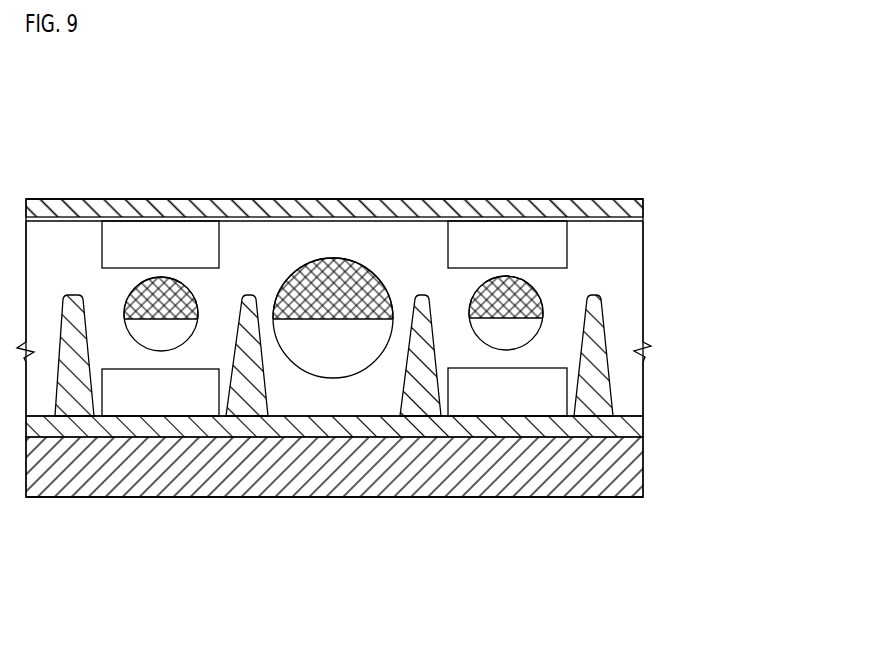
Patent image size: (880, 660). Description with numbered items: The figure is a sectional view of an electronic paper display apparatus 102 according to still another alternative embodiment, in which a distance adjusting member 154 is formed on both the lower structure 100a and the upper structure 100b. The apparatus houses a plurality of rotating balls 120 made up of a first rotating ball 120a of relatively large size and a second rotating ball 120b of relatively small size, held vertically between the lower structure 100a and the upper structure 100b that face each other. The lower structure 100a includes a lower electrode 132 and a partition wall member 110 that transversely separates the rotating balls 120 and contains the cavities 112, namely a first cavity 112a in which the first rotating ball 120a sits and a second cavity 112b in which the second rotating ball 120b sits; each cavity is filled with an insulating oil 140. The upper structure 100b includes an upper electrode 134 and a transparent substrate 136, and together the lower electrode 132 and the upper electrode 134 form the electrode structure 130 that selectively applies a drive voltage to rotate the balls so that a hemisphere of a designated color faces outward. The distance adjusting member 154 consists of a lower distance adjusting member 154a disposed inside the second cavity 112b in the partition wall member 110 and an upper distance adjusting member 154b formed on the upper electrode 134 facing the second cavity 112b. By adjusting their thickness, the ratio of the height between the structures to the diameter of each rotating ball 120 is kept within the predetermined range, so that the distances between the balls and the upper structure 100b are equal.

The electronic paper display apparatus 102 is at (65, 75).
The lower structure 100a is at (98, 497).
The upper structure 100b is at (80, 200).
The partition wall member 110 is at (508, 412).
The cavities 112 is at (317, 549).
The first cavity 112a is at (285, 388).
The second cavity 112b is at (222, 386).
The rotating balls 120 is at (387, 135).
The first rotating ball 120a is at (333, 258).
The second rotating ball 120b is at (161, 277).
The electrode structure 130 is at (736, 227).
The lower electrode 132 is at (643, 465).
The upper electrode 134 is at (643, 221).
The transparent substrate 136 is at (643, 207).
The insulating oil 140 is at (602, 235).
The distance adjusting member 154 is at (543, 135).
The distance adjusting member 154a is at (448, 392).
The distance adjusting member 154b is at (512, 232).